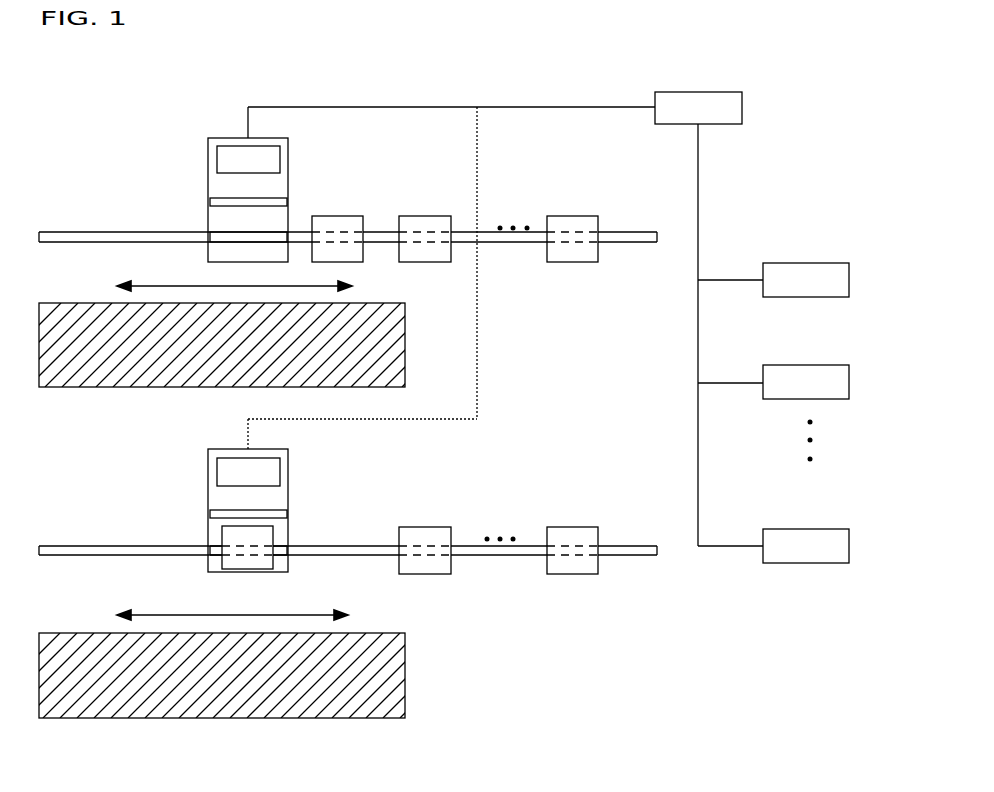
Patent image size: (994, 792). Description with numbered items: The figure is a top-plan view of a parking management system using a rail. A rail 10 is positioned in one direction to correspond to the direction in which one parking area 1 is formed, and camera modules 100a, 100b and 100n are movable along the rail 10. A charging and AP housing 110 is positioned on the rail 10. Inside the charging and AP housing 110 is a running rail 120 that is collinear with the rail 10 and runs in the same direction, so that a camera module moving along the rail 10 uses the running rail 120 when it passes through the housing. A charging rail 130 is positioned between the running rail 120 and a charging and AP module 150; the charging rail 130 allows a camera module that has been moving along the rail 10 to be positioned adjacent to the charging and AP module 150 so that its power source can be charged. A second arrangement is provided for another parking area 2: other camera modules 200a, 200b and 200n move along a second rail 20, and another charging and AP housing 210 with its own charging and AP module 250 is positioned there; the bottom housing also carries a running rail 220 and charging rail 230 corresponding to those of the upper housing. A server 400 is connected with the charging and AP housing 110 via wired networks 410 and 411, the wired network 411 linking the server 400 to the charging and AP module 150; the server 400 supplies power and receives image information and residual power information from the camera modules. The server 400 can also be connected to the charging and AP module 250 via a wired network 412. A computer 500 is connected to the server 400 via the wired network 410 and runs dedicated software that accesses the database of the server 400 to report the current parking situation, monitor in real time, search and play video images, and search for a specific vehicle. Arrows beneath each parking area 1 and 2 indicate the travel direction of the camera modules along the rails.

The parking area 1 is at (405, 347).
The parking area 2 is at (405, 680).
The rail 10 is at (641, 232).
The second guide rail 20 is at (640, 546).
The camera module 100a is at (337, 216).
The camera module 100b is at (426, 216).
The camera module 100n is at (573, 216).
The charging and AP housing 110 is at (208, 214).
The running rail 120 is at (218, 240).
The charging rail 130 is at (210, 200).
The charging and AP module 150 is at (217, 160).
The camera module 200a is at (273, 565).
The camera module 200b is at (426, 527).
The camera module 200n is at (573, 527).
The charging and AP housing 210 is at (208, 525).
The second moving unit 220 is at (218, 551).
The second communication unit 230 is at (210, 512).
The charging and AP module 250 is at (217, 471).
The server 400 is at (700, 92).
The wired network 410 is at (538, 107).
The wired network 411 is at (350, 107).
The wired network 412 is at (477, 345).
The computer (PC) 500 is at (809, 263).